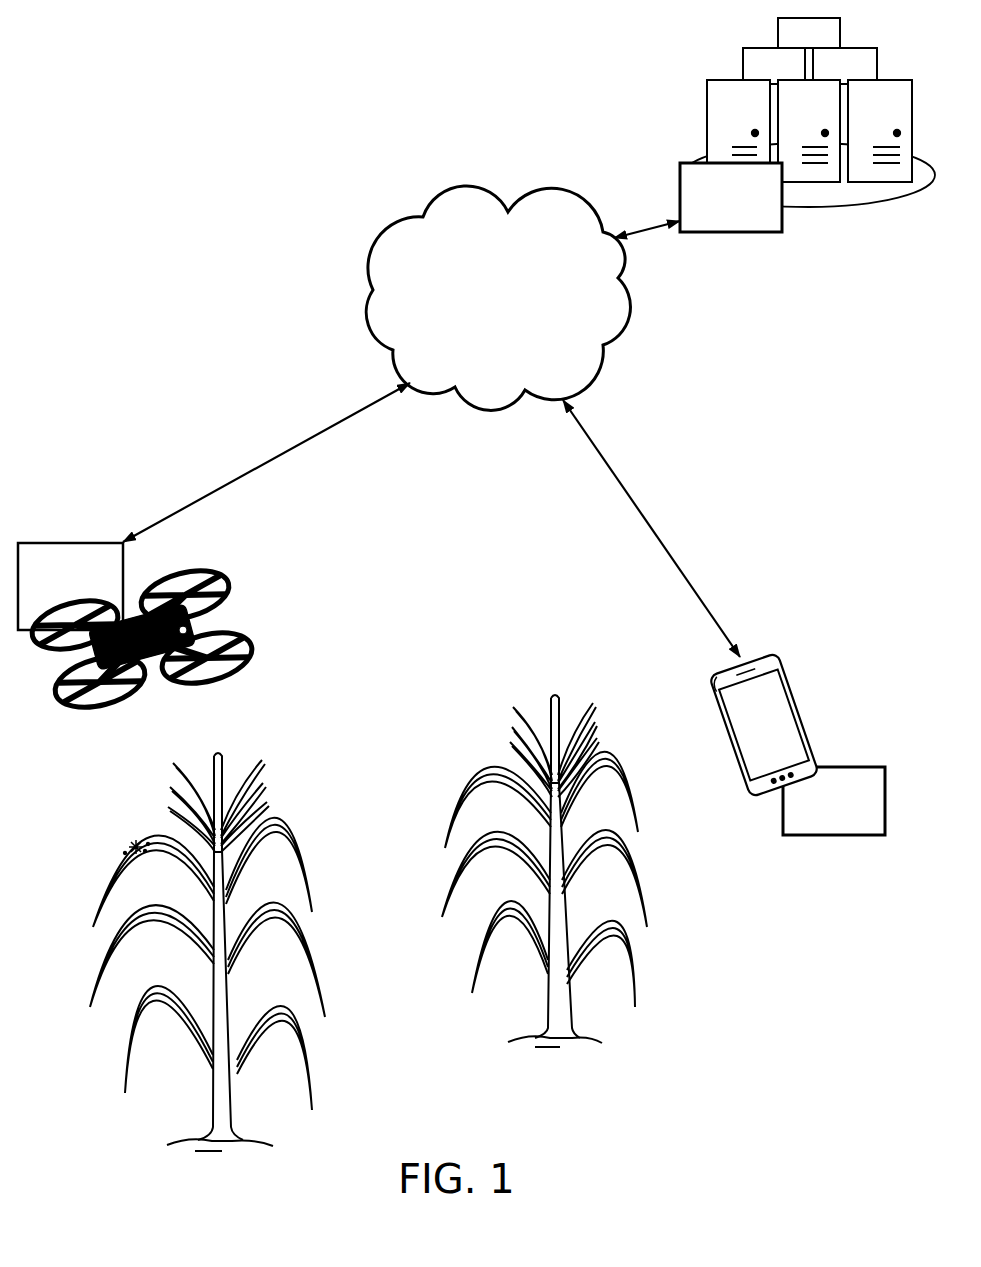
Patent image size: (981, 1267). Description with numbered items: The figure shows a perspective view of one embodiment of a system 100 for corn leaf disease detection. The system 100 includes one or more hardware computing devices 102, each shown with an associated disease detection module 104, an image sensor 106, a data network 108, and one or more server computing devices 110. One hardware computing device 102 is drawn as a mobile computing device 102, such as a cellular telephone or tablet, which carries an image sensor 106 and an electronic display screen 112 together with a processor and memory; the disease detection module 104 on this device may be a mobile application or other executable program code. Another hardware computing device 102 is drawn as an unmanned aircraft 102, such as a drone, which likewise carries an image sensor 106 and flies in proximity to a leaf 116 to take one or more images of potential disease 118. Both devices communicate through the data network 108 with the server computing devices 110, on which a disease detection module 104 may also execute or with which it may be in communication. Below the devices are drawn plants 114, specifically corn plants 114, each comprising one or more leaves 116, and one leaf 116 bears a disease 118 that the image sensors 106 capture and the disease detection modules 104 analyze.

The system 100 is at (116, 27).
The hardware computing device 102 is at (99, 702).
The disease detection module 104 is at (712, 207).
The image sensor 106 is at (194, 630).
The data network 108 is at (517, 327).
The server computing device 110 is at (707, 84).
The electronic display screen 112 is at (784, 720).
The plant 114 is at (222, 1128).
The leaf 116 is at (106, 880).
The disease 118 is at (134, 840).